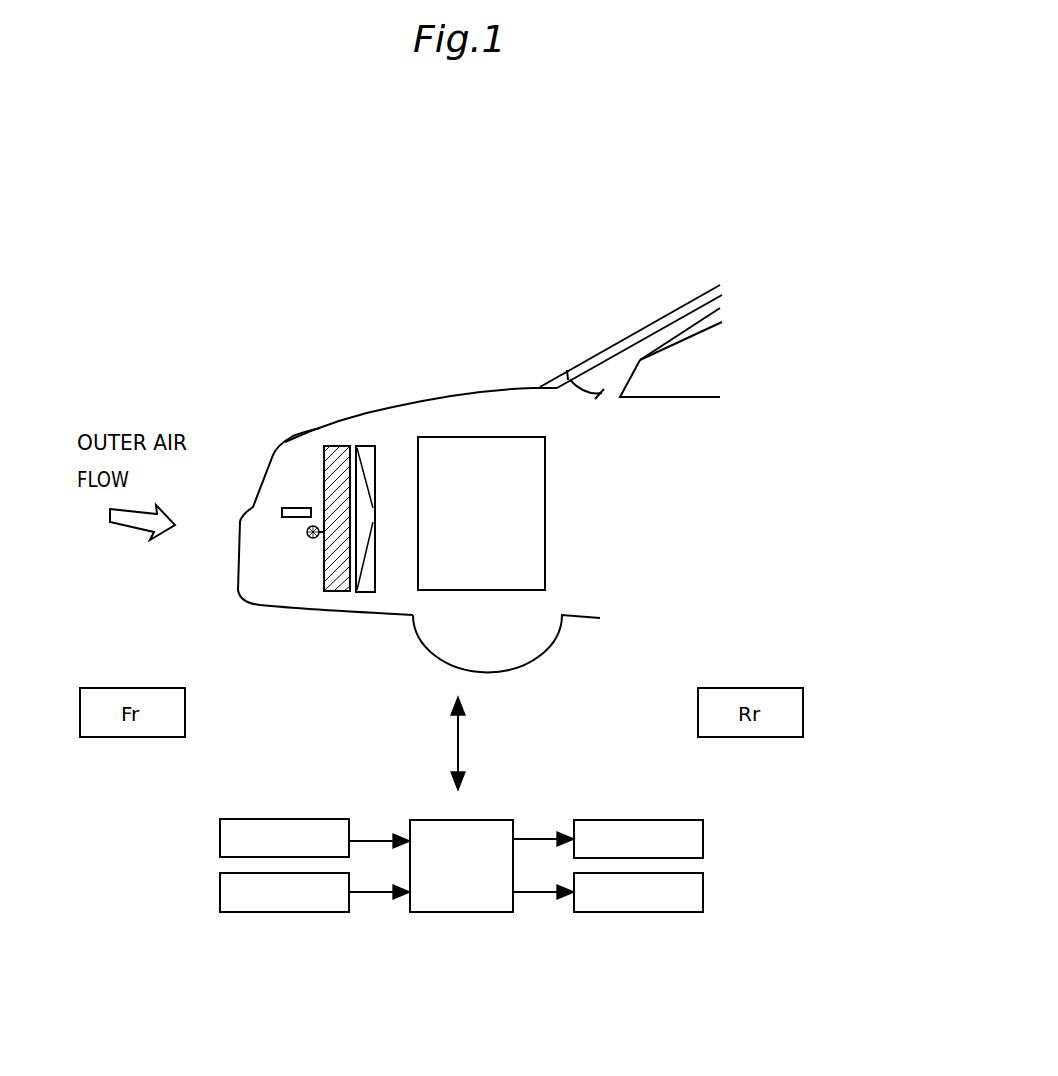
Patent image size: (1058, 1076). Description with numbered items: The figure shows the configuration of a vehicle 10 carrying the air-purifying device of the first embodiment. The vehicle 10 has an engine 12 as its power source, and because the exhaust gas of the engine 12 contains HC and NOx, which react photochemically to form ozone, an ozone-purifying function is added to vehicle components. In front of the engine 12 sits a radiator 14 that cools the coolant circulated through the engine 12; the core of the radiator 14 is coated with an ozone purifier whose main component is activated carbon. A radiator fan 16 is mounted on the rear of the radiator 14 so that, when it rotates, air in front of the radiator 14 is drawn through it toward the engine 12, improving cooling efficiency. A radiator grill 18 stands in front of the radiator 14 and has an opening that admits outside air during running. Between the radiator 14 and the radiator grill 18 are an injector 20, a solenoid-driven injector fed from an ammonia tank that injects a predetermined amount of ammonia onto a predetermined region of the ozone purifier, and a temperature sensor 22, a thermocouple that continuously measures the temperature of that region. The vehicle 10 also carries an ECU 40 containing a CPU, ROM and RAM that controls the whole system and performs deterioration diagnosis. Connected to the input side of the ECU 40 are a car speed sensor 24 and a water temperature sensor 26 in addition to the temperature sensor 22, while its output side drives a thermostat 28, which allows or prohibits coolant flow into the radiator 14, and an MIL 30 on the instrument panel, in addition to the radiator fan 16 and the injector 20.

The vehicle 10 is at (485, 388).
The engine 12 is at (545, 502).
The radiator 14 is at (345, 446).
The radiator fan 16 is at (368, 446).
The radiator grill 18 is at (273, 460).
The injector 20 is at (290, 518).
The temperature sensor 22 is at (311, 540).
The car speed sensor 24 is at (220, 840).
The water temperature sensor 26 is at (220, 893).
The thermostat 28 is at (703, 840).
The MIL (Malfunction Indication Lamp) 30 is at (703, 893).
The ECU (Electronic Control Unit) 40 is at (487, 820).